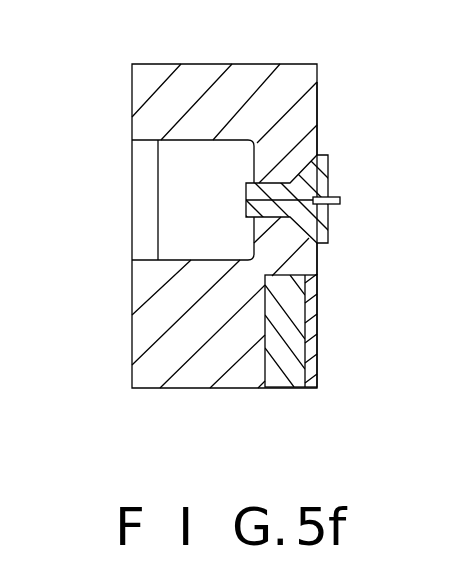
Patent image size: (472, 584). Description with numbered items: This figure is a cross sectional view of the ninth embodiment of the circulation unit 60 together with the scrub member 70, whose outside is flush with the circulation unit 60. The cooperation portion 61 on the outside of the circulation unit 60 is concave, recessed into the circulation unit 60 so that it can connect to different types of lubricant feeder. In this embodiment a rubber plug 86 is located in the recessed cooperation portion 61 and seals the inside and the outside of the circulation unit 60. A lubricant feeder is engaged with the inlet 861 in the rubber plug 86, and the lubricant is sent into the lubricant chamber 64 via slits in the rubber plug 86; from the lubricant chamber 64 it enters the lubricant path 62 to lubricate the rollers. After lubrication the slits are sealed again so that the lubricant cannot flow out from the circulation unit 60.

The circulation unit 60 is at (172, 64).
The cooperation portion 61 is at (305, 150).
The lubricant path 62 is at (142, 173).
The lubricant chamber 64 is at (180, 232).
The scrub member 70 is at (318, 322).
The rubber plug 86 is at (330, 177).
The inlet 861 is at (339, 205).